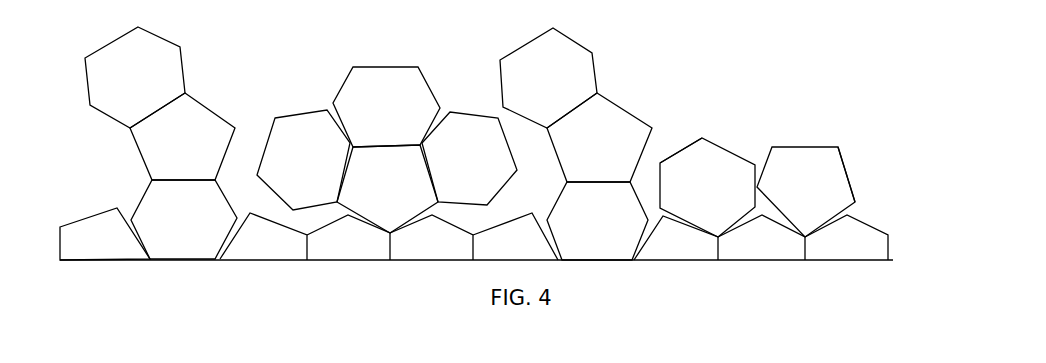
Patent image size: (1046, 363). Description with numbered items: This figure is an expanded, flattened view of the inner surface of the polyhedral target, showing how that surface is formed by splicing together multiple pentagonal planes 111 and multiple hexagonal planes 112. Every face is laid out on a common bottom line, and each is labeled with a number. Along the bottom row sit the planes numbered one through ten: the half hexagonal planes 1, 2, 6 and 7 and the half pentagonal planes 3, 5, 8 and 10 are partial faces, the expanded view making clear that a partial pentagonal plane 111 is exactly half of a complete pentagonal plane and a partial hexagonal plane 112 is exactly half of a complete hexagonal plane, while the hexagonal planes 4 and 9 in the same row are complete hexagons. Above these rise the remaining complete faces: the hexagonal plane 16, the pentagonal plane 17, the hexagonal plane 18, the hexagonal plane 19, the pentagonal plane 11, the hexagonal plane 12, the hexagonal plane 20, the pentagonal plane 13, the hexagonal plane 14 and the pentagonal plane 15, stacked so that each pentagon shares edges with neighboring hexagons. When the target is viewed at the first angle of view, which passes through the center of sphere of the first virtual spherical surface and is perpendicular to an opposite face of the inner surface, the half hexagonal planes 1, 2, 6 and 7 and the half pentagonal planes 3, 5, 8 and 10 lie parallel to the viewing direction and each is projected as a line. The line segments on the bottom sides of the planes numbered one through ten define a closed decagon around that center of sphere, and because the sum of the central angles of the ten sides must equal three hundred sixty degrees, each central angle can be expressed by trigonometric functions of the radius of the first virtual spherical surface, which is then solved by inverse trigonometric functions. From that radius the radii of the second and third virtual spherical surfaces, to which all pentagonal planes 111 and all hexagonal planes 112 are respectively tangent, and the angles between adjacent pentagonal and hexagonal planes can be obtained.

The half hexagonal plane 1 is at (348, 237).
The half hexagonal plane 2 is at (431, 237).
The half pentagonal plane 3 is at (515, 236).
The hexagonal plane 4 is at (597, 221).
The half pentagonal plane 5 is at (676, 238).
The half hexagonal plane 6 is at (761, 237).
The half hexagonal plane 7 is at (846, 237).
The half pentagonal plane 8 is at (105, 234).
The hexagonal plane 9 is at (184, 219).
The half pentagonal plane 10 is at (263, 236).
The pentagonal plane 11 is at (387, 189).
The hexagonal plane 12 is at (469, 158).
The pentagonal plane 13 is at (599, 137).
The hexagonal plane 14 is at (707, 187).
The pentagonal plane 15 is at (806, 192).
The hexagonal plane 16 is at (135, 77).
The pentagonal plane 17 is at (182, 136).
The hexagonal plane 18 is at (303, 160).
The hexagonal plane 19 is at (386, 107).
The hexagonal plane 20 is at (548, 78).
The pentagonal plane 111 is at (832, 166).
The hexagonal plane 112 is at (690, 162).